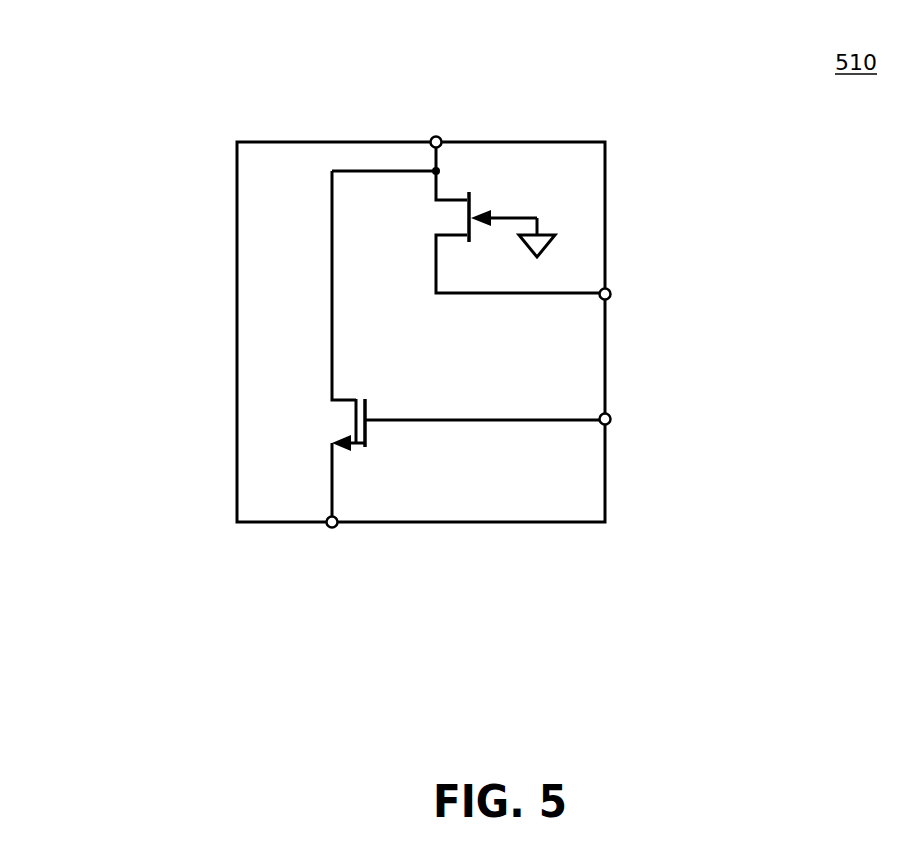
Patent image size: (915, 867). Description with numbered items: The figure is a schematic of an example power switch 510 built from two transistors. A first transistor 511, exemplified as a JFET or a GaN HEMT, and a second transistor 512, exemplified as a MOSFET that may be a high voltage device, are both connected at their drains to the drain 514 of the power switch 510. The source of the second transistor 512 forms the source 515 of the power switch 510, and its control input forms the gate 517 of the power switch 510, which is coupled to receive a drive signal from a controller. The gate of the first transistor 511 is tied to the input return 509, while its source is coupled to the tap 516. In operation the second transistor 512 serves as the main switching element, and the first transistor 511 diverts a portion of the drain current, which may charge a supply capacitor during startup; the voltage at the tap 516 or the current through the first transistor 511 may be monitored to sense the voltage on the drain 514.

The power switch 510 is at (228, 194).
The drain 514 is at (424, 134).
The first transistor Q1 511 is at (481, 200).
The input return 509 is at (573, 216).
The tap 516 is at (627, 292).
The second transistor Q2 512 is at (372, 402).
The gate 517 is at (614, 431).
The source 515 is at (318, 529).